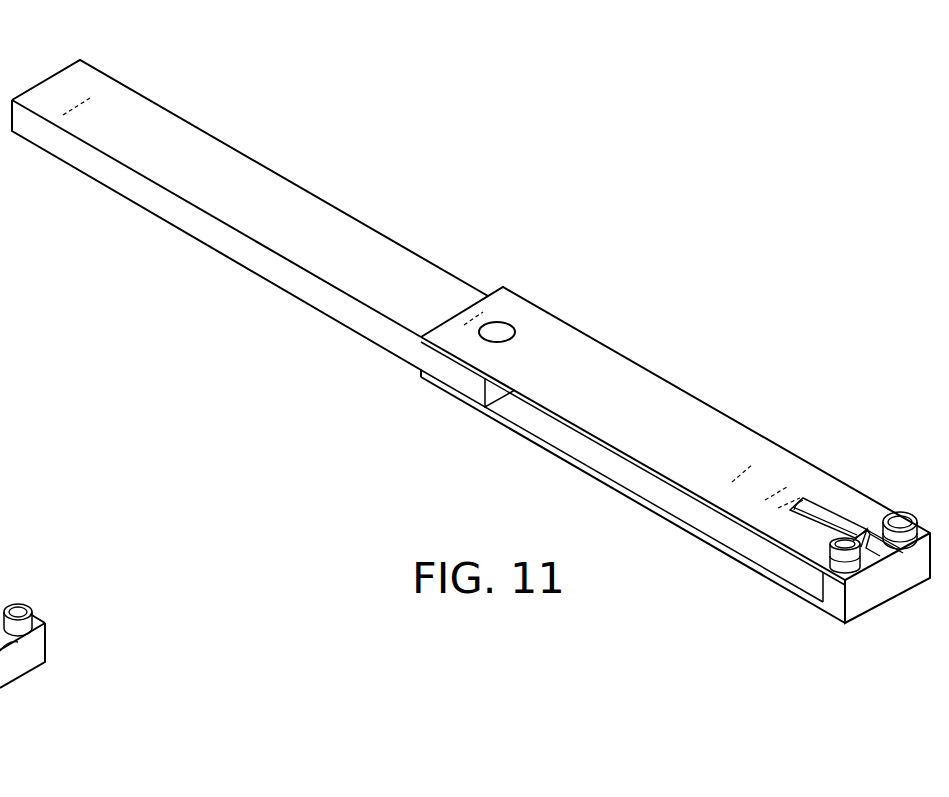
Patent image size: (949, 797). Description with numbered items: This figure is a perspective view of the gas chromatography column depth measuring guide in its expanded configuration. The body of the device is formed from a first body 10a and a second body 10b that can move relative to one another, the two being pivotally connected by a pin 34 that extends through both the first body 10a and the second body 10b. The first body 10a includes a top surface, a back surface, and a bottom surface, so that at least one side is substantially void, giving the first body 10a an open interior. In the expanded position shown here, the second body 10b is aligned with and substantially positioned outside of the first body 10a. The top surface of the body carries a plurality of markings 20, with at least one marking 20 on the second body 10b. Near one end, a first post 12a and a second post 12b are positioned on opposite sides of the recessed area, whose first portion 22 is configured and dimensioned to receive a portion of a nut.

The first body 10a is at (607, 364).
The second body 10b is at (305, 202).
The first post 12a is at (902, 513).
The second post 12b is at (862, 570).
The markings 20 is at (108, 84).
The first portion 22 is at (878, 556).
The pin 34 is at (501, 324).